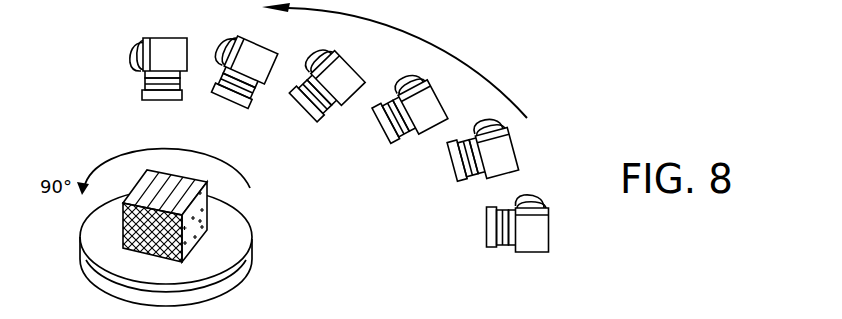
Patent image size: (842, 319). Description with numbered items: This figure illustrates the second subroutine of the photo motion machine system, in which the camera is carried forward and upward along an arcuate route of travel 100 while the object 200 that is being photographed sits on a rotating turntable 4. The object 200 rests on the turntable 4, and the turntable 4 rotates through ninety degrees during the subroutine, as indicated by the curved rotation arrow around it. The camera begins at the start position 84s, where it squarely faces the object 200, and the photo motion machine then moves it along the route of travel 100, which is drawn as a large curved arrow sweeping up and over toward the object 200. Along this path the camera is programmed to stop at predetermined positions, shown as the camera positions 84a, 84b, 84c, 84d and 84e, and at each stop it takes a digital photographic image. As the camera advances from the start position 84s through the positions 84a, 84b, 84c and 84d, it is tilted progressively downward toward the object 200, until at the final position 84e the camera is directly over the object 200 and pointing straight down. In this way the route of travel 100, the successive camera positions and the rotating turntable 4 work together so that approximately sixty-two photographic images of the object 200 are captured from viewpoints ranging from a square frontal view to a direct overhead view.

The turntable 4 is at (98, 256).
The object 200 is at (125, 222).
The arcuate route of travel 100 is at (417, 43).
The camera position 84e is at (158, 53).
The camera position 84d is at (248, 65).
The camera position 84c is at (336, 82).
The camera position 84b is at (424, 108).
The camera position 84a is at (500, 150).
The camera start position 84s is at (541, 223).